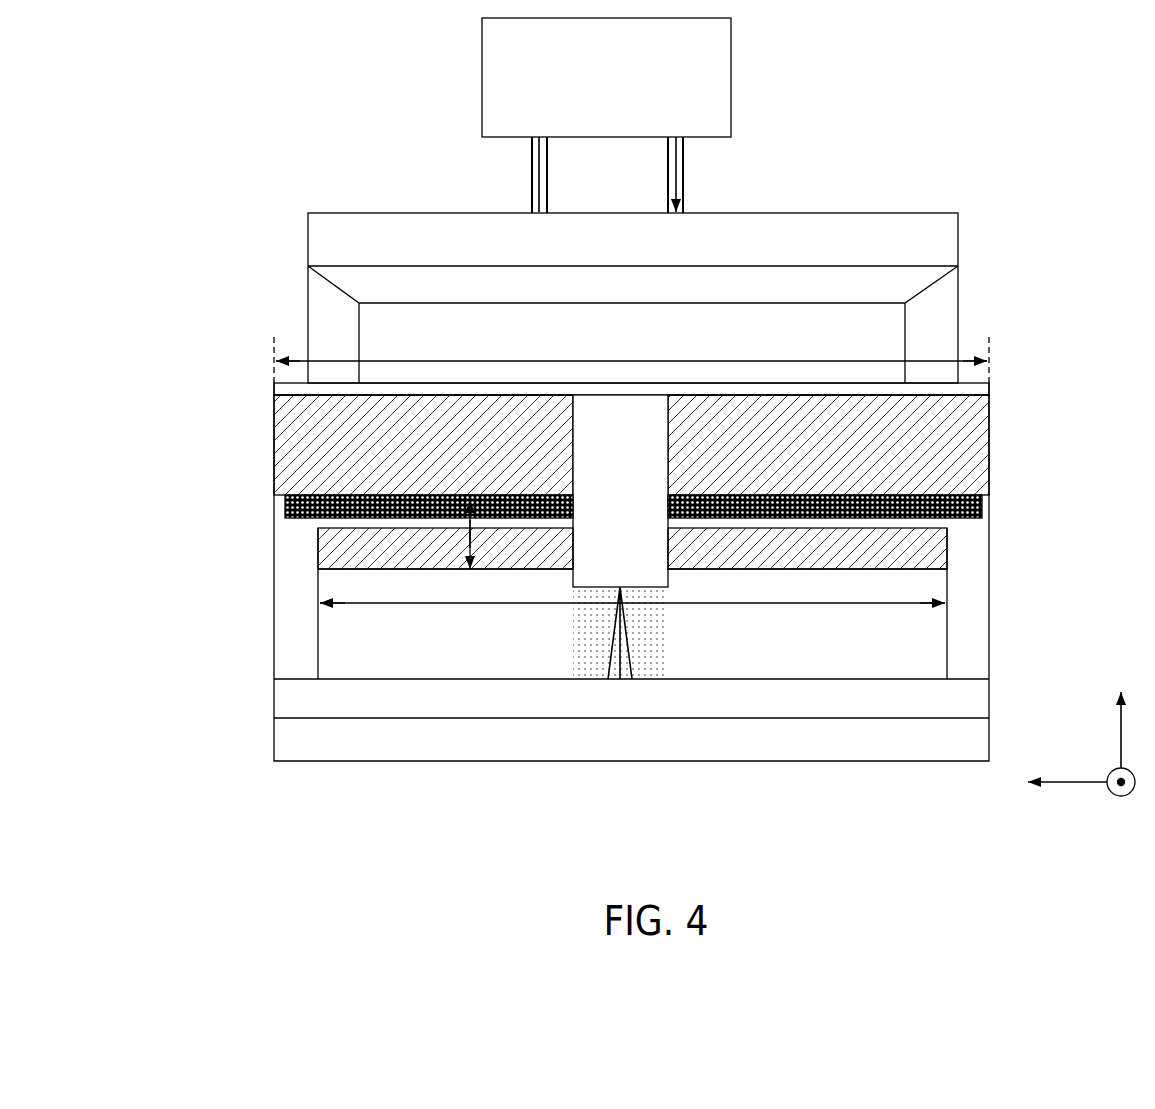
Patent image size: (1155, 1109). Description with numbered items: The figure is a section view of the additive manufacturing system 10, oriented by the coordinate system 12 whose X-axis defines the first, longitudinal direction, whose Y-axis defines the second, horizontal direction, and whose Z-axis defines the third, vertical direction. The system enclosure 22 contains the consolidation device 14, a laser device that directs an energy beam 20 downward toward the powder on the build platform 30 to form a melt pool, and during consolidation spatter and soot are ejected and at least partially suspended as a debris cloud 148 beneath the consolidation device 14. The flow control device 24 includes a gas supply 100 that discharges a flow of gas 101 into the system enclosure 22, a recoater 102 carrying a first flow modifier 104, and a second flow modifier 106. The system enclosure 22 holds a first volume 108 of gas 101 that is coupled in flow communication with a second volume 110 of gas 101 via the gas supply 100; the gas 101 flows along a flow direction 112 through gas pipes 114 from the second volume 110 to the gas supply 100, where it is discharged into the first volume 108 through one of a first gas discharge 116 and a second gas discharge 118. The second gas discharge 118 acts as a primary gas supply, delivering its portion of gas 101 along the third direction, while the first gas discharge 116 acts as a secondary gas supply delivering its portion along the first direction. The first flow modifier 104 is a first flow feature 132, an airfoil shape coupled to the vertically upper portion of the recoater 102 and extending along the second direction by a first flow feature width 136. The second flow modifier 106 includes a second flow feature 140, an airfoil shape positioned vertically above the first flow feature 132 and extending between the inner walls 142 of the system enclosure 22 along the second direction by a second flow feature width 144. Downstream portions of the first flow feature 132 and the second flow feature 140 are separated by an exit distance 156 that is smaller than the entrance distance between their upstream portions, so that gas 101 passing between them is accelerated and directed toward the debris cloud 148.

The additive manufacturing system 10 is at (876, 77).
The coordinate system 12 is at (1082, 812).
The consolidation device 14 is at (640, 410).
The energy beam 20 is at (625, 638).
The system enclosure 22 is at (274, 388).
The flow control device 24 is at (203, 268).
The build platform 30 is at (286, 694).
The gas supply 100 is at (1003, 305).
The gas 101 is at (697, 58).
The recoater 102 is at (960, 645).
The first flow modifier 104 is at (332, 540).
The second flow modifier 106 is at (975, 433).
The first volume 108 is at (286, 635).
The second volume 110 is at (620, 101).
The flow direction 112 is at (532, 183).
The gas pipes 114 is at (532, 165).
The first gas discharge 116 is at (285, 507).
The second gas discharge 118 is at (308, 238).
The first flow feature 132 is at (332, 553).
The first flow feature width 136 is at (458, 608).
The second flow feature 140 is at (975, 472).
The inner walls 142 is at (975, 598).
The second flow feature width 144 is at (562, 360).
The debris cloud 148 is at (576, 641).
The exit distance 156 is at (462, 548).